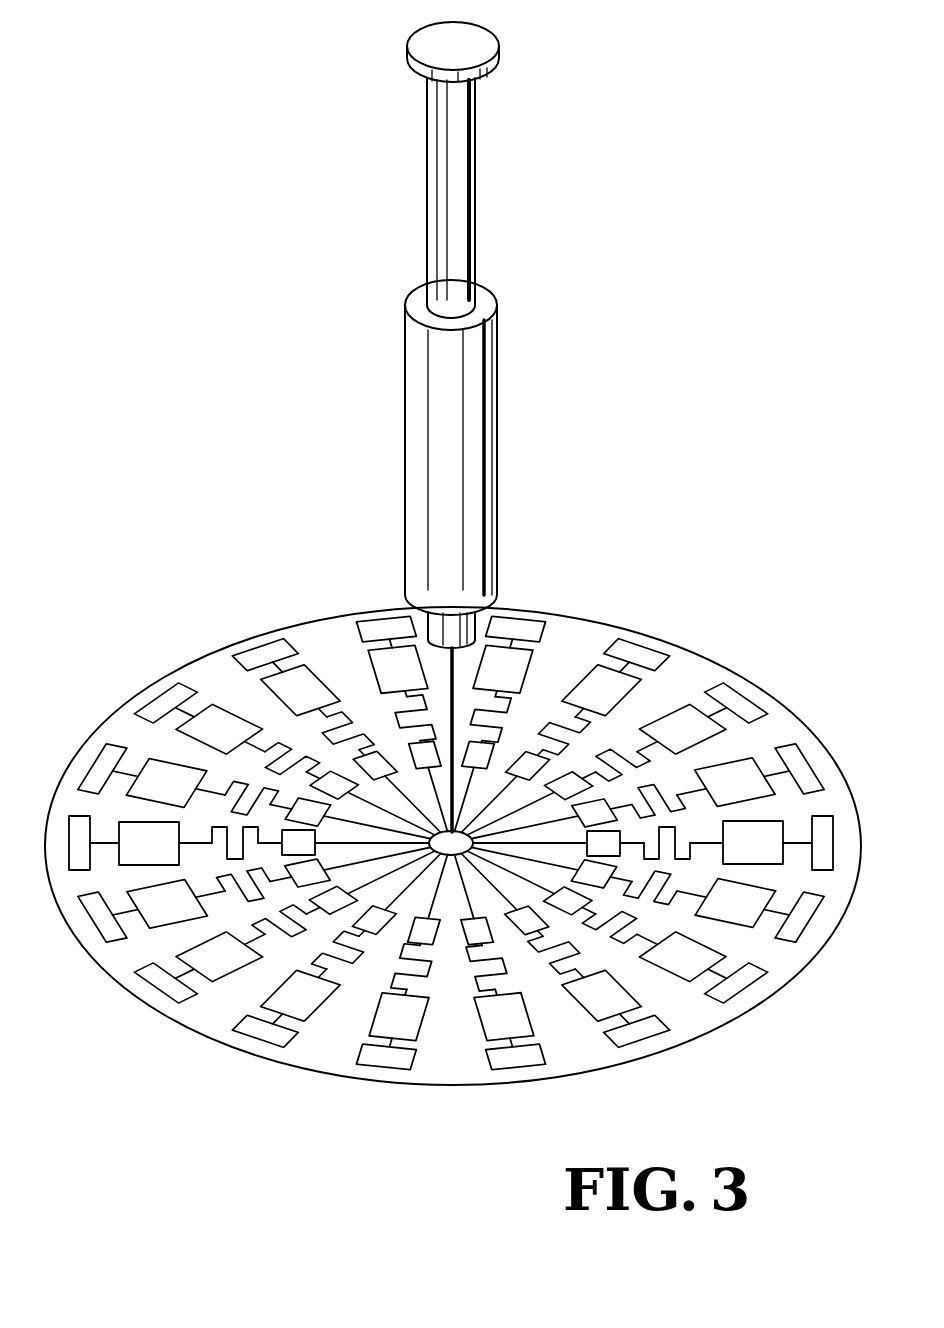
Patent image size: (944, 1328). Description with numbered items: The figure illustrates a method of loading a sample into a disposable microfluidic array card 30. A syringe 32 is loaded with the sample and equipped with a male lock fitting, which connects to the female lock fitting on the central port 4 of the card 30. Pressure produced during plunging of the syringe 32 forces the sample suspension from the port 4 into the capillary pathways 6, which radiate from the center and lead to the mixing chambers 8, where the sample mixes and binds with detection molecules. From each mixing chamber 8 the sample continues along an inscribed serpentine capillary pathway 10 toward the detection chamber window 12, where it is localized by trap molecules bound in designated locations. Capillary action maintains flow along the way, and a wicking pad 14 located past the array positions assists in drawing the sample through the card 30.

The lock fitting 4 is at (428, 840).
The capillary pathways 6 is at (462, 841).
The mixing chambers 8 is at (567, 777).
The serpentine capillary pathways 10 is at (697, 765).
The detection chambers 12 is at (692, 749).
The wicking pads 14 is at (740, 708).
The disposable microfluidic array card 30 is at (225, 680).
The syringe 32 is at (498, 405).